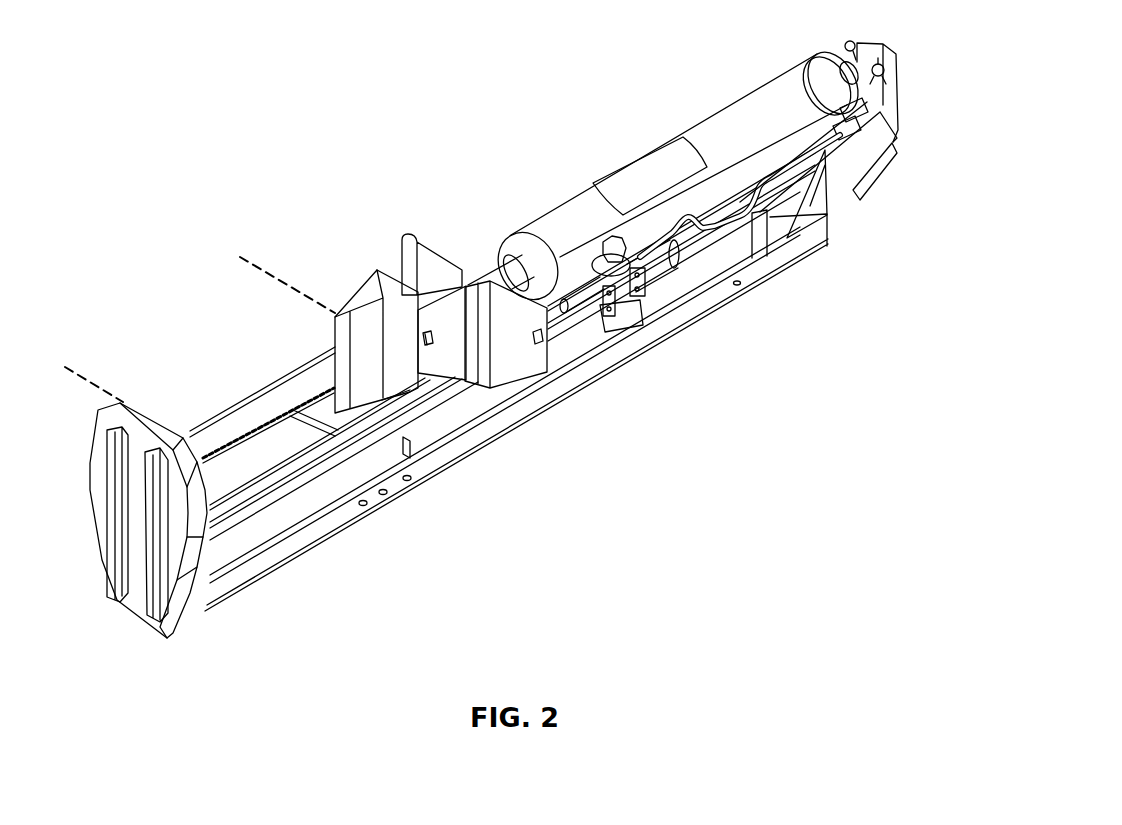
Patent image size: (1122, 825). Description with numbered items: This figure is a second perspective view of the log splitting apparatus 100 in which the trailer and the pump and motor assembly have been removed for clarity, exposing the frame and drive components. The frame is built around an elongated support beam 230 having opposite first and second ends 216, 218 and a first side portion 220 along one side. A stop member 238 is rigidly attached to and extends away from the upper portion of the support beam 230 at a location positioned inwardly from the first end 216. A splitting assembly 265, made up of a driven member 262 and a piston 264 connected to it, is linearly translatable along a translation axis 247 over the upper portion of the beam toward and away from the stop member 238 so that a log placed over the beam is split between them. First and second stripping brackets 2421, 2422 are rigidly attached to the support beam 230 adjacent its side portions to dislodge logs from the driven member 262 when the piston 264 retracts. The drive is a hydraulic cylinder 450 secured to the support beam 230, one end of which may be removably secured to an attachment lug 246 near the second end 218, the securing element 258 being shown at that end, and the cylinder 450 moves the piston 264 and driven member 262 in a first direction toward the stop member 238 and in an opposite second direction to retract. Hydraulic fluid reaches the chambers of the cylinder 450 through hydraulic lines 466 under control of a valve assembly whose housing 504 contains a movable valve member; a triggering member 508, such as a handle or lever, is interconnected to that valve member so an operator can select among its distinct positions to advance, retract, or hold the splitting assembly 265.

The log splitting apparatus 100 is at (492, 128).
The first end 216 is at (205, 634).
The second end 218 is at (914, 107).
The first side portion 220 is at (190, 430).
The support beam 230 is at (702, 308).
The stop member 238 is at (97, 478).
The first stripping bracket 2421 is at (525, 365).
The second stripping bracket 2422 is at (420, 237).
The attachment lug 246 is at (886, 46).
The translation axis 247 is at (281, 421).
The fitting 258 is at (882, 70).
The driven member 262 is at (342, 316).
The piston 264 is at (450, 305).
The splitting assembly 265 is at (443, 354).
The cylinder 450 is at (760, 110).
The hydraulic lines 466 is at (770, 220).
The housing 504 is at (643, 282).
The triggering member 508 is at (597, 318).